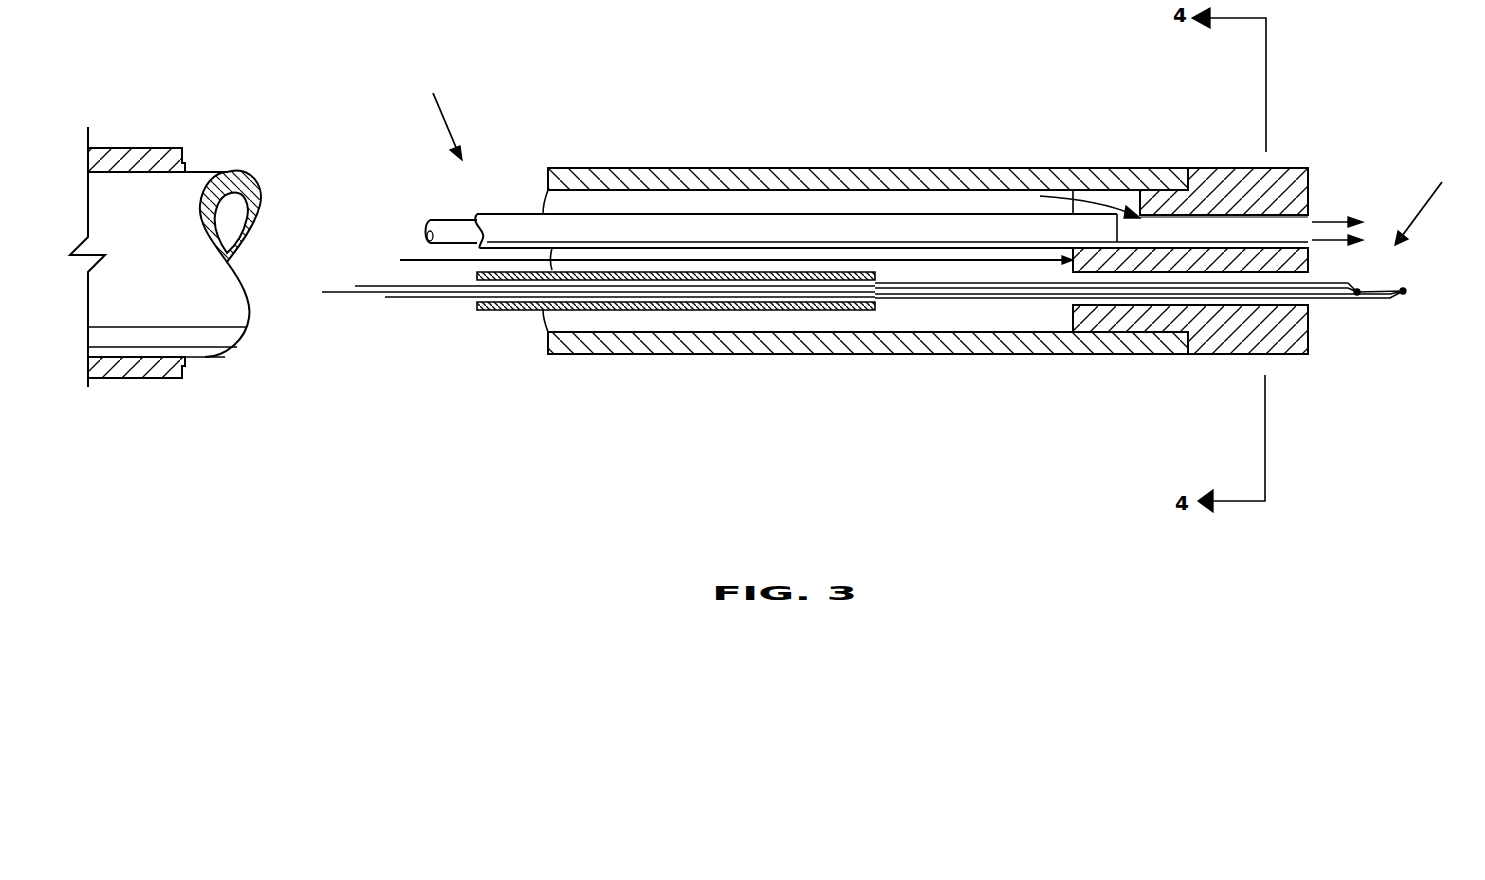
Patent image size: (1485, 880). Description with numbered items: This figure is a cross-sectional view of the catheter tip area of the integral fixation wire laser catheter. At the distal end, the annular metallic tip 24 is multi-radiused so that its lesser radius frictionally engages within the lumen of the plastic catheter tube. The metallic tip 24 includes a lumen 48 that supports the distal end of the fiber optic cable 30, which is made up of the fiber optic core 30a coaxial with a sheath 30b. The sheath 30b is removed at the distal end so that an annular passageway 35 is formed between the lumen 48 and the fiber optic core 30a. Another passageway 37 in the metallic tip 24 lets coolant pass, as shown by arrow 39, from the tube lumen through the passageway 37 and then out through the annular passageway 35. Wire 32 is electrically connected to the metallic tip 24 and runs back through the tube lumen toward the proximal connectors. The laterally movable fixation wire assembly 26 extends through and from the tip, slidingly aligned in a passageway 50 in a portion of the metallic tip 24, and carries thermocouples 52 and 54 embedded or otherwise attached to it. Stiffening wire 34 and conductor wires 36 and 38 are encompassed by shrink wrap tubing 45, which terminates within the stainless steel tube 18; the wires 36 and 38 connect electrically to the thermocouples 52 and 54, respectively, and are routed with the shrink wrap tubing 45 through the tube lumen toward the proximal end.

The stainless steel tube 18 is at (162, 156).
The annular metallic tip 24 is at (1243, 337).
The fixation wire assembly 26 is at (1436, 209).
The fiber optic cable 30 is at (441, 114).
The fiber optic core 30a is at (455, 222).
The sheath 30b is at (537, 220).
The wire 32 is at (415, 260).
The stiffening wire 34 is at (365, 293).
The annular passageway 35 is at (1278, 215).
The wire 36 is at (388, 286).
The passageway 37 is at (1113, 200).
The wire 38 is at (457, 300).
The arrow 39 is at (1085, 203).
The shrink wrap tubing 45 is at (533, 310).
The lumen 48 is at (1235, 173).
The passageway 50 is at (1310, 303).
The thermocouple 52 is at (1357, 290).
The thermocouple 54 is at (1405, 290).